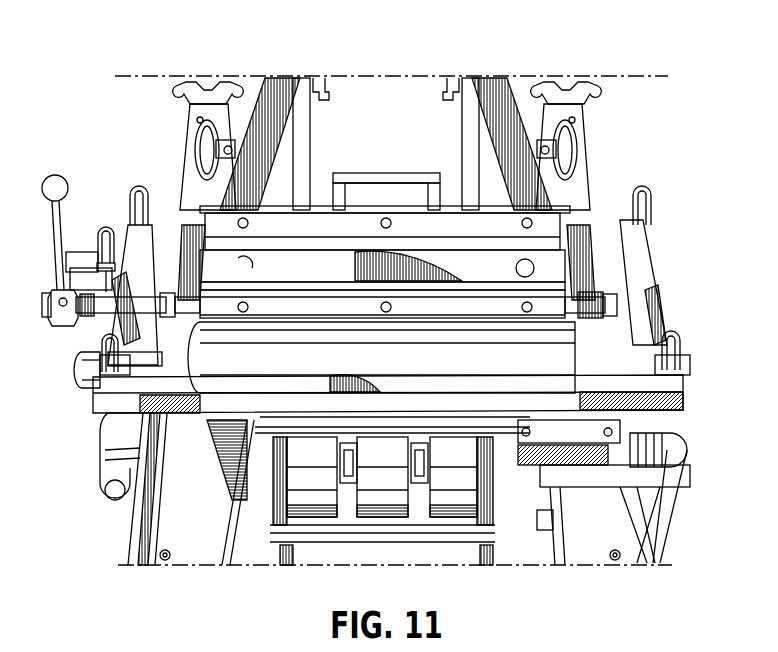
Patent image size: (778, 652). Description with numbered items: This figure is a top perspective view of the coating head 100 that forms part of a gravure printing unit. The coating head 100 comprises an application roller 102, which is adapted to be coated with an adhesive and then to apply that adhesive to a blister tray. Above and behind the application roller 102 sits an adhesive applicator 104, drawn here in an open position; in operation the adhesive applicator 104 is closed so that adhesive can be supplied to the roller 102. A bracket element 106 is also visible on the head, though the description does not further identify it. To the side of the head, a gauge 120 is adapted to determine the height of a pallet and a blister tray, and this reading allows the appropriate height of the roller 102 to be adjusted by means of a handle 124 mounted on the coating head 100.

The coating head 100 is at (122, 114).
The application roller 102 is at (228, 360).
The adhesive applicator 104 is at (414, 220).
The guide bracket 106 is at (367, 177).
The gauge 120 is at (206, 163).
The handle 124 is at (210, 100).